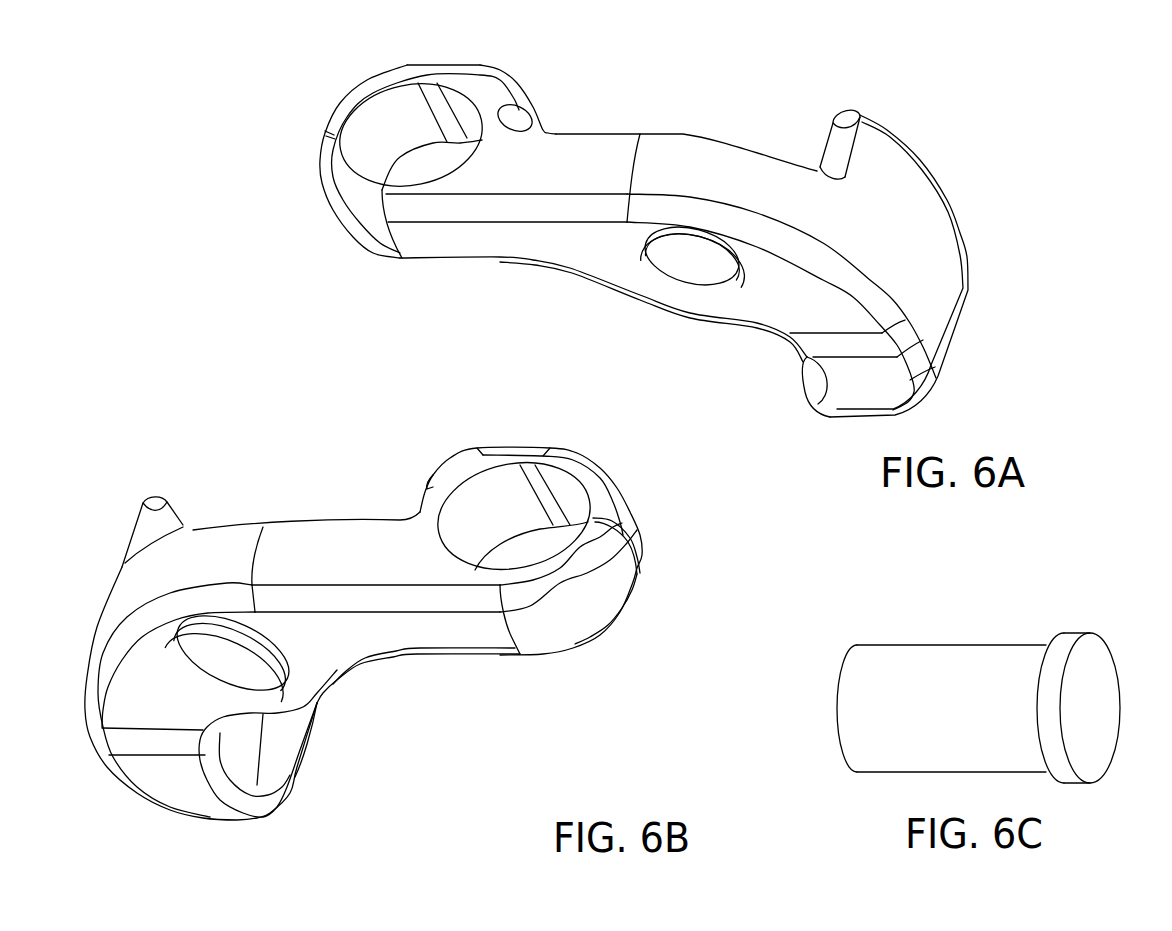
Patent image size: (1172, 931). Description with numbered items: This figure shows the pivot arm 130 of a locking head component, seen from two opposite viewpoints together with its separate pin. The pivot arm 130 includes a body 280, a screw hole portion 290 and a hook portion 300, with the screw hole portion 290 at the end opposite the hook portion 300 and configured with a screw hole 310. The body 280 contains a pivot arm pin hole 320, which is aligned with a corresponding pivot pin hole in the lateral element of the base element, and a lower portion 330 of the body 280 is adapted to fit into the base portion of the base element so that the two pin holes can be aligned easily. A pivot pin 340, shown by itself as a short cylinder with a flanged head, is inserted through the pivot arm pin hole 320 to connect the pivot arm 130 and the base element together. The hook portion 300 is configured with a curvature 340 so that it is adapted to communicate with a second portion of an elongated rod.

In FIG. 6A, the pivot arm 130 is at (815, 105).
In FIG. 6B, the pivot arm 130 is at (190, 483).
In FIG. 6A, the body 280 is at (683, 133).
In FIG. 6B, the body 280 is at (317, 520).
In FIG. 6A, the screw hole portion 290 is at (476, 82).
In FIG. 6B, the screw hole portion 290 is at (613, 475).
In FIG. 6A, the hook portion 300 is at (920, 243).
In FIG. 6B, the hook portion 300 is at (143, 794).
In FIG. 6A, the screw hole 310 is at (410, 172).
In FIG. 6B, the screw hole 310 is at (547, 547).
In FIG. 6A, the pivot arm pin hole 320 is at (687, 267).
In FIG. 6B, the pivot arm pin hole 320 is at (232, 652).
In FIG. 6A, the lower portion 330 is at (550, 267).
In FIG. 6B, the lower portion 330 is at (380, 665).
In FIG. 6B, the pivot pin 340 is at (258, 762).
In FIG. 6C, the pivot pin 340 is at (977, 636).